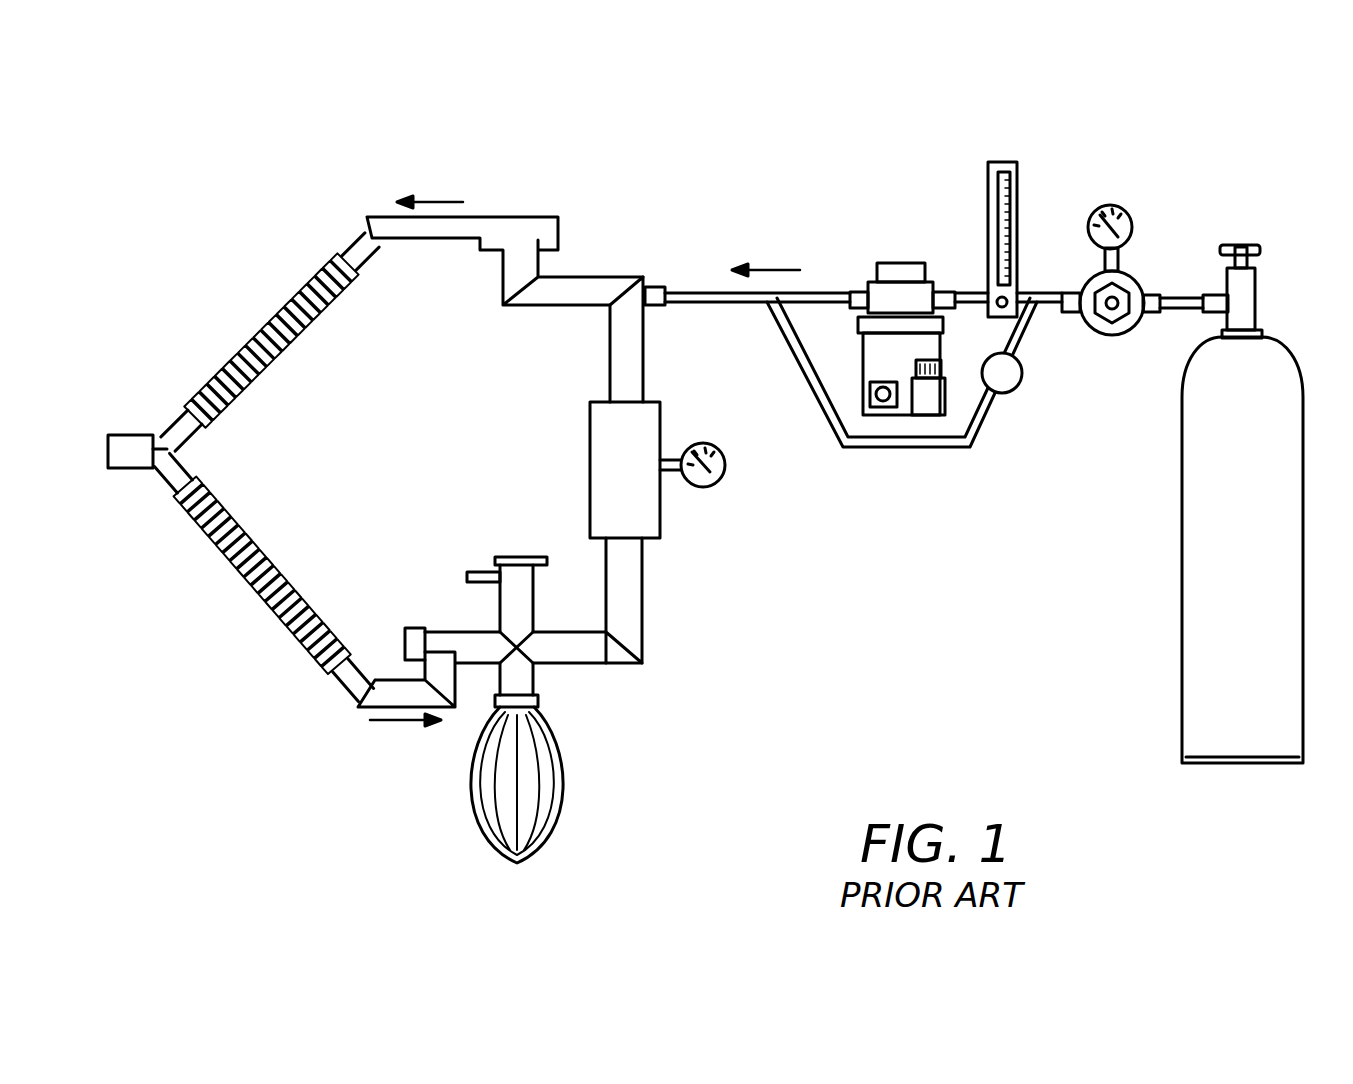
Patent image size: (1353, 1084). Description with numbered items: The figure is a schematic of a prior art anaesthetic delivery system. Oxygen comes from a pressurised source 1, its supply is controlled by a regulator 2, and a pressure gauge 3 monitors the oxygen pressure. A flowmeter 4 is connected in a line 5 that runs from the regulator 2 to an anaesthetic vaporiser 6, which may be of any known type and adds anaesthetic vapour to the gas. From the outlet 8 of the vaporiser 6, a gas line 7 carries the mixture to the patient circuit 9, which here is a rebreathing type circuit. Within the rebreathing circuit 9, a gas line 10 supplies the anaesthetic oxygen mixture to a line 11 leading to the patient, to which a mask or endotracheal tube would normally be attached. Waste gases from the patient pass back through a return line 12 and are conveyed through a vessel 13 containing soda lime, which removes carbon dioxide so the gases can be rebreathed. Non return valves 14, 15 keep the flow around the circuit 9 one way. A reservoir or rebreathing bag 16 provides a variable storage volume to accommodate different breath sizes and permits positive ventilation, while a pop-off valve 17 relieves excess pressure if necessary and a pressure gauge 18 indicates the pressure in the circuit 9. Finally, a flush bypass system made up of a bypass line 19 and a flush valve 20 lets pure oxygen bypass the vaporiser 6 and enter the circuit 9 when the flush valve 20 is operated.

The pressurised source of oxygen 1 is at (1198, 602).
The regulator 2 is at (1118, 338).
The pressure gauge 3 is at (1135, 215).
The flowmeter 4 is at (1017, 172).
The line 5 is at (968, 297).
The anaesthetic vaporiser 6 is at (868, 278).
The gas line 7 is at (700, 292).
The outlet 8 is at (850, 295).
The patient circuit 9 is at (331, 203).
The gas line 10 is at (244, 338).
The line to the patient 11 is at (124, 442).
The return line 12 is at (283, 617).
The vessel 13 is at (663, 530).
The non return valve 14 is at (433, 637).
The non return valve 15 is at (520, 235).
The rebreathing bag 16 is at (483, 793).
The pop-off valve 17 is at (506, 557).
The pressure gauge 18 is at (722, 485).
The bypass line 19 is at (898, 447).
The flush valve 20 is at (1022, 393).